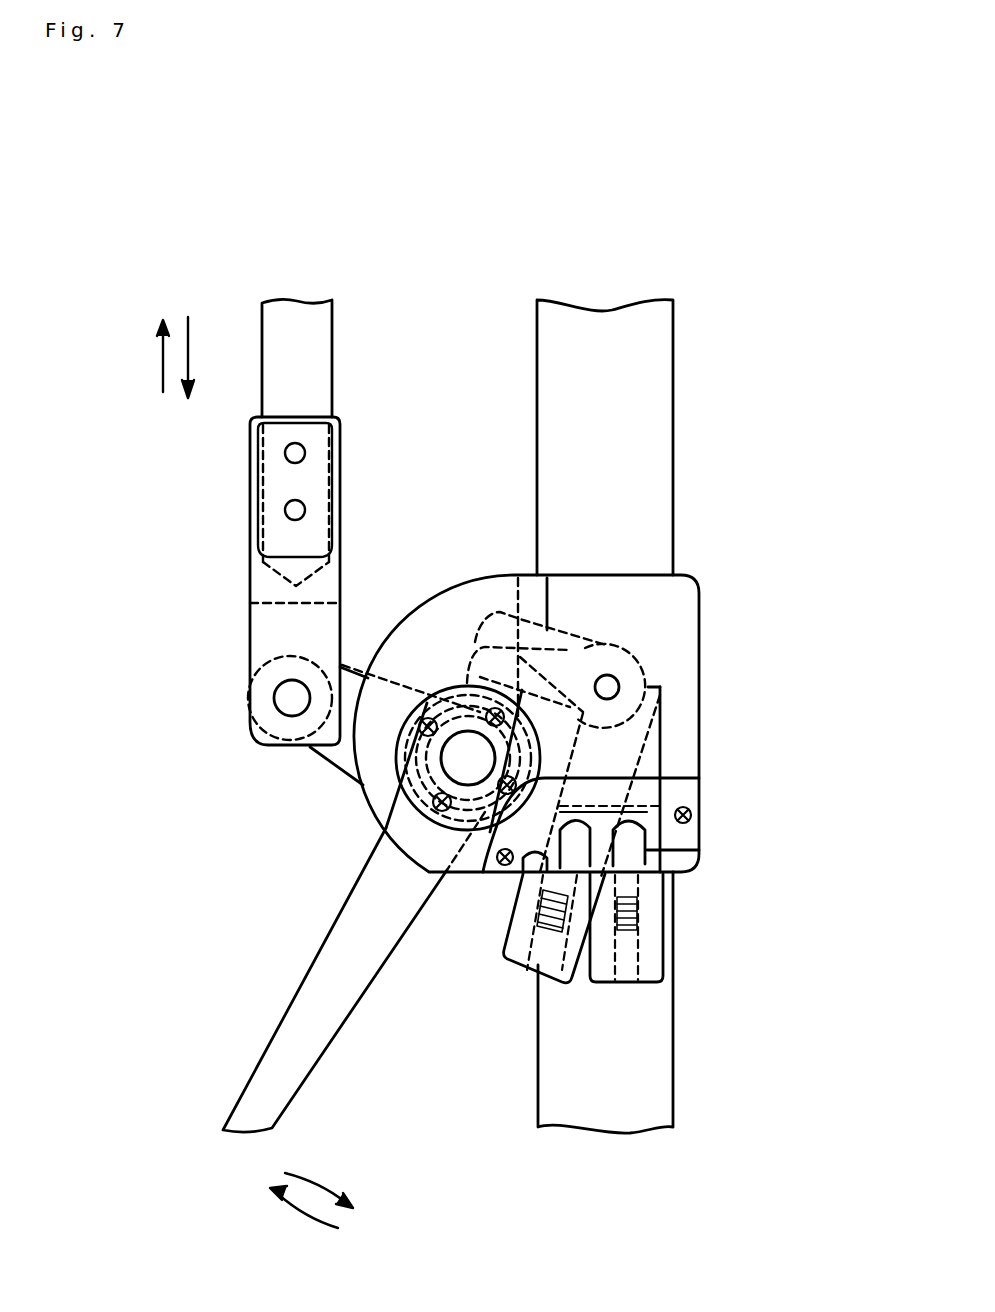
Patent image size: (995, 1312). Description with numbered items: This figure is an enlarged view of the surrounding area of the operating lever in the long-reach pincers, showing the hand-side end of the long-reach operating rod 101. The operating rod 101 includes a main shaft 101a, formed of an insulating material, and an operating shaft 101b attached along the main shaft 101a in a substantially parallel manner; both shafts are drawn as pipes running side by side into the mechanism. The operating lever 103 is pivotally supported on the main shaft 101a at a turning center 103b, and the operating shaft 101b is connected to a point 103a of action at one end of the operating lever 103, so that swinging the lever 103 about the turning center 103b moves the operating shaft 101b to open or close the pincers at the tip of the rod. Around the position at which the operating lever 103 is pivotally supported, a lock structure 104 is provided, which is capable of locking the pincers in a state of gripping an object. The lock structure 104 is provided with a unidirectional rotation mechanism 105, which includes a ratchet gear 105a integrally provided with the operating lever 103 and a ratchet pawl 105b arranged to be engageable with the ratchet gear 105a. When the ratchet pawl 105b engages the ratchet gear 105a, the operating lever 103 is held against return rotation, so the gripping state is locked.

The long-reach operating rod 101 is at (532, 185).
The main shaft 101a is at (540, 390).
The operating shaft 101b is at (333, 366).
The operating lever 103 is at (347, 997).
The point of action 103a is at (288, 703).
The turning center 103b is at (468, 758).
The lock structure 104 is at (719, 564).
The unidirectional rotation mechanism 105 is at (527, 498).
The ratchet gear 105a is at (430, 693).
The ratchet pawl 105b is at (537, 575).